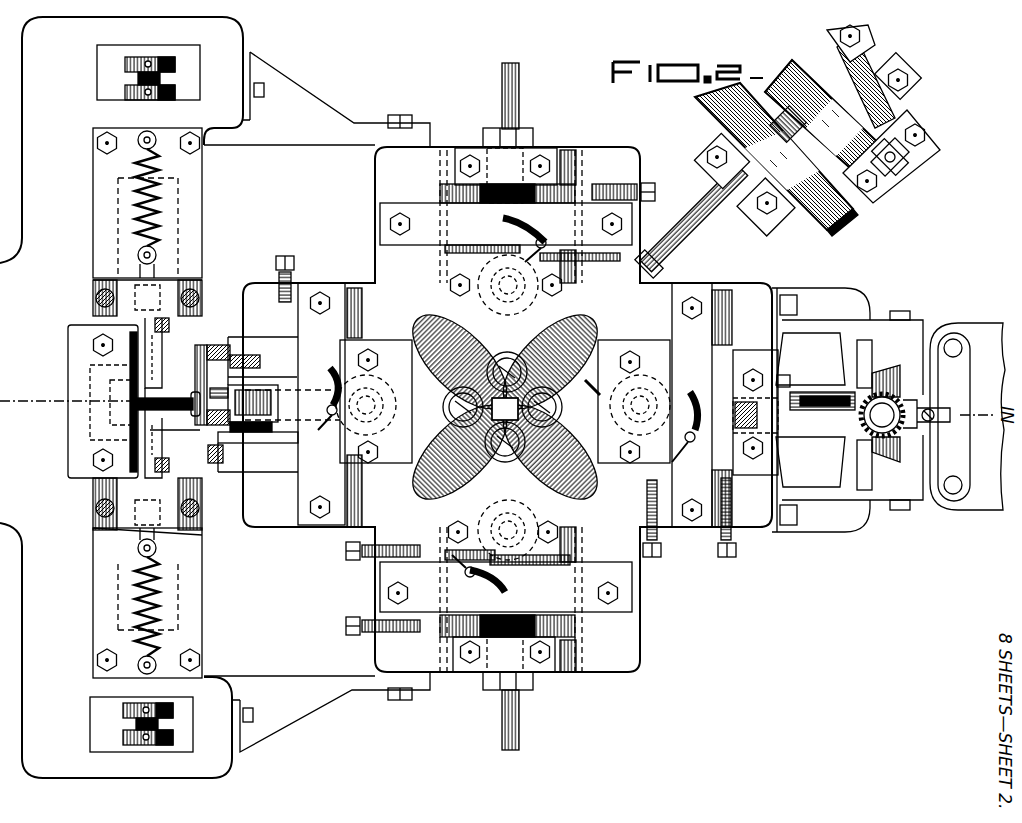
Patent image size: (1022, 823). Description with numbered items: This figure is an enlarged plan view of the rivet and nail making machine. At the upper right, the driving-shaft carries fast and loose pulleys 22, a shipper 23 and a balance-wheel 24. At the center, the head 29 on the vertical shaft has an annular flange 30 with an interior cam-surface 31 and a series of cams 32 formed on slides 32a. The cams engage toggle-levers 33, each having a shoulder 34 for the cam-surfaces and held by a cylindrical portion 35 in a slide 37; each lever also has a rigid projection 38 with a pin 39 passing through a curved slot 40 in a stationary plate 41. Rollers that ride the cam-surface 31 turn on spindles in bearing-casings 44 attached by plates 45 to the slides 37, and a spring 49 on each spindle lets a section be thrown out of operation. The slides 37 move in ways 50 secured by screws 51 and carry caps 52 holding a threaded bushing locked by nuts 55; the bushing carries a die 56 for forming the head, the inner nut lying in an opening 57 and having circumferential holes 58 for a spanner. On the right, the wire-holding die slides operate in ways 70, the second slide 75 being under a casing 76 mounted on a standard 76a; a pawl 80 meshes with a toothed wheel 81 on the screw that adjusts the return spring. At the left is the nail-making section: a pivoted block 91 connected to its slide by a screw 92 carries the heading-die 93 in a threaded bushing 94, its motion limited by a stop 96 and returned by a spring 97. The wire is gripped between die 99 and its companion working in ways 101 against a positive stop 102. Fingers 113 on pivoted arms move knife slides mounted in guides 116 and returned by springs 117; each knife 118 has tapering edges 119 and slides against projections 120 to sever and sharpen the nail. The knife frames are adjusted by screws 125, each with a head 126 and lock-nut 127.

The fast and loose pulleys 22 is at (772, 72).
The shipper 23 is at (928, 150).
The balance-wheel 24 is at (842, 218).
The head 29 is at (500, 529).
The annular flange 30 is at (455, 470).
The interior cam-surface 31 is at (565, 430).
The cams 32 is at (570, 352).
The slides 32a is at (601, 381).
The toggle-levers 33 is at (632, 401).
The shoulder 34 is at (502, 285).
The cylindrical portion 35 is at (695, 484).
The slide 37 is at (615, 465).
The rigid projection 38 is at (543, 246).
The pin 39 is at (541, 238).
The curved slot 40 is at (505, 224).
The stationary plate 41 is at (598, 630).
The bearing-casings 44 is at (520, 495).
The plates 45 is at (374, 401).
The spring 49 is at (465, 355).
The ways 50 is at (745, 505).
The screws 51 is at (660, 190).
The caps 52 is at (545, 150).
The nuts 55 is at (520, 185).
The die 56 is at (520, 92).
The opening 57 is at (712, 385).
The circumferential holes 58 is at (445, 190).
The ways 70 is at (862, 372).
The second slide 75 is at (885, 380).
The casing 76 is at (945, 340).
The standard 76a is at (956, 378).
The pawl 80 is at (932, 410).
The toothed wheel 81 is at (882, 415).
The pivoted block 91 is at (252, 362).
The screw 92 is at (202, 345).
The heading-die 93 is at (205, 352).
The threaded bushing 94 is at (262, 390).
The screw or stop 96 is at (208, 455).
The spring 97 is at (263, 443).
The die 99 is at (112, 393).
The ways 101 is at (112, 437).
The positive stop 102 is at (68, 352).
The finger 113 is at (100, 293).
The guides 116 is at (194, 222).
The springs 117 is at (160, 198).
The knife 118 is at (148, 386).
The tapering edges 119 is at (150, 392).
The projections 120 is at (145, 428).
The screws 125 is at (135, 80).
The head 126 is at (172, 67).
The lock-nut 127 is at (176, 94).